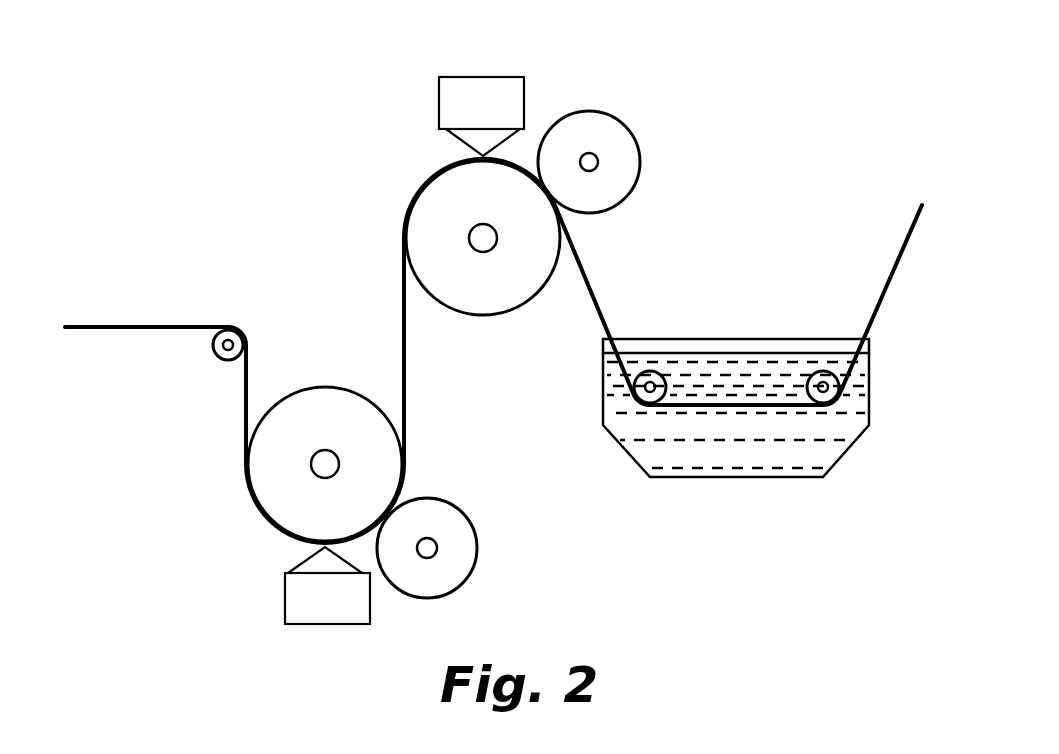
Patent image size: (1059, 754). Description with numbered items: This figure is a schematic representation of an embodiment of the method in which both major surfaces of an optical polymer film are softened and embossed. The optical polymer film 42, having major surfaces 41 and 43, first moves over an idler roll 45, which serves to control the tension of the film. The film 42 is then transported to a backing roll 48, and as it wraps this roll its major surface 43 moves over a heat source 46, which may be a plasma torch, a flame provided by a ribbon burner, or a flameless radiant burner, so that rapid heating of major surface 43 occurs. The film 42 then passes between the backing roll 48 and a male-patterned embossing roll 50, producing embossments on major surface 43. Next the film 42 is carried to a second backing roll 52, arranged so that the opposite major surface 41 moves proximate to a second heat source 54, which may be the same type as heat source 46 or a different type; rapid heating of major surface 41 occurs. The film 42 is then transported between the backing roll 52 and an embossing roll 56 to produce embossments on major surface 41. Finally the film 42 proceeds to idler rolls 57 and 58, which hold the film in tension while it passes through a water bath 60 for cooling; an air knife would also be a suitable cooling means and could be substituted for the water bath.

The major surface 41 is at (155, 323).
The optical polymer film 42 is at (113, 315).
The major surface 43 is at (135, 329).
The idler roll 45 is at (218, 356).
The heat source 46 is at (293, 601).
The backing roll 48 is at (308, 397).
The male-patterned embossing roll 50 is at (455, 517).
The second backing roll 52 is at (478, 303).
The second heat source 54 is at (461, 92).
The embossing roll 56 is at (597, 120).
The idler roll 57 is at (652, 370).
The idler roll 58 is at (822, 372).
The water bath 60 is at (756, 478).